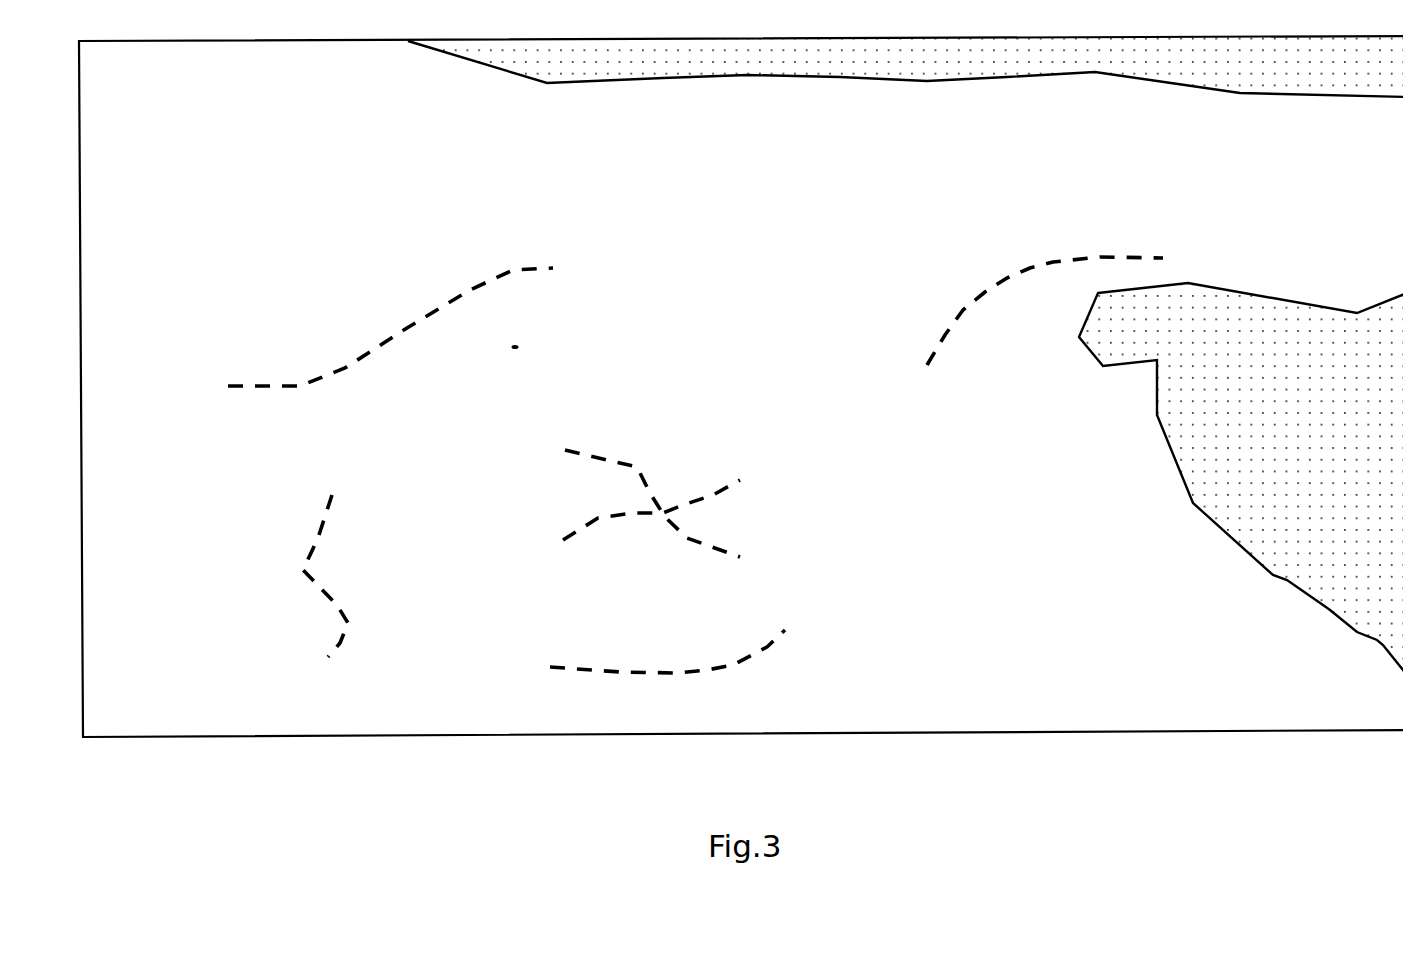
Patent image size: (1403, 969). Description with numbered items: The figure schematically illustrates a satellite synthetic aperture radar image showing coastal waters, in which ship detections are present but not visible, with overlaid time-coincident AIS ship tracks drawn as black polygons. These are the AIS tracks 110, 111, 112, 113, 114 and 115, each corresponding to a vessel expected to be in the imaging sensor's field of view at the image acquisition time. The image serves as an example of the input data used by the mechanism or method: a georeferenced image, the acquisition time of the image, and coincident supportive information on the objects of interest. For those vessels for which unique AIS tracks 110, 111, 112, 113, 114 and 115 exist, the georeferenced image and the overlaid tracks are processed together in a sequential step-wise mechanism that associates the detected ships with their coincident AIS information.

The AIS ship track 110 is at (343, 368).
The AIS ship track 111 is at (320, 520).
The AIS ship track 112 is at (1008, 278).
The AIS ship track 113 is at (620, 672).
The AIS ship track 114 is at (565, 450).
The AIS ship track 115 is at (745, 480).